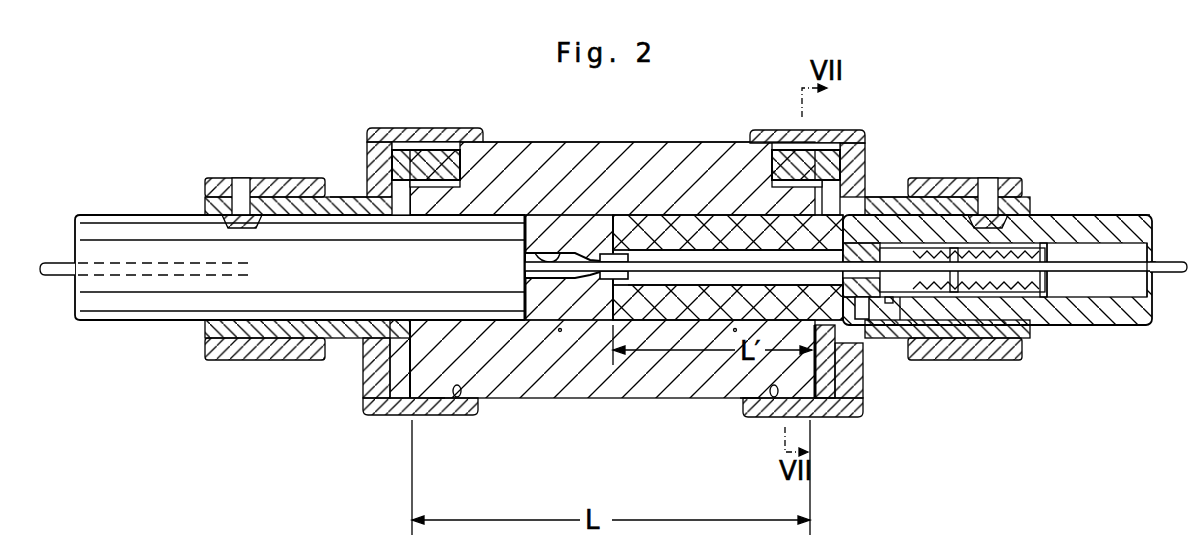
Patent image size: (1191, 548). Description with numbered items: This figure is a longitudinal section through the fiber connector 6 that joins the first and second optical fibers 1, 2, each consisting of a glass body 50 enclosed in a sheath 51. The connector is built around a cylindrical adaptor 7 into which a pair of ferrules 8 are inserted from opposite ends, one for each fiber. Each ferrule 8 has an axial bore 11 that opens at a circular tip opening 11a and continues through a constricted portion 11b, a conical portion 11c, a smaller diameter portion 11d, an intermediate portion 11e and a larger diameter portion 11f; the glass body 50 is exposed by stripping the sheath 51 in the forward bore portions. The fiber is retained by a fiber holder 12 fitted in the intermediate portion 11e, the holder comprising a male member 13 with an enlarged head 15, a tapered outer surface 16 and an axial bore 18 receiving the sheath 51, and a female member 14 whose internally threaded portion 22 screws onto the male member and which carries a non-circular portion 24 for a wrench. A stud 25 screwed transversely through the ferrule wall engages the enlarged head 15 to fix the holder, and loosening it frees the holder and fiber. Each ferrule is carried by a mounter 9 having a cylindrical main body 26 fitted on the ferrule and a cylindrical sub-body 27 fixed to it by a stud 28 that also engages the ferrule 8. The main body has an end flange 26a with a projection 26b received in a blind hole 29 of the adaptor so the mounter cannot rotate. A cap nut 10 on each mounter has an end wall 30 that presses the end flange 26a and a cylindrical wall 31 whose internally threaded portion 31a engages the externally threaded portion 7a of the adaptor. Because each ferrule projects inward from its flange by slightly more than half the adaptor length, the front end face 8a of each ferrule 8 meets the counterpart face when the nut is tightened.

The first optical fiber 1 is at (1100, 250).
The second optical fiber 2 is at (53, 280).
The fiber connector 6 is at (652, 98).
The cylindrical adaptor 7 is at (616, 398).
The externally threaded portion 7a is at (435, 417).
The ferrule 8 is at (325, 303).
The front end face 8a is at (597, 250).
The mounter 9 is at (341, 190).
The cap nut 10 is at (410, 128).
The axial bore 11 is at (548, 240).
The circular tip opening 11a is at (630, 300).
The constricted portion 11b is at (650, 250).
The conical portion 11c is at (690, 262).
The smaller diameter portion 11d is at (728, 262).
The intermediate portion 11e is at (905, 297).
The larger diameter portion 11f is at (1130, 300).
The fiber holder 12 is at (1000, 297).
The male member 13 is at (870, 320).
The female member 14 is at (1038, 258).
The enlarged head 15 is at (848, 398).
The tapered outer surface 16 is at (1040, 297).
The axial bore 18 is at (958, 297).
The internally threaded portion 22 is at (1072, 258).
The non-circular portion 24 is at (955, 297).
The stud 25 is at (888, 302).
The cylindrical main body 26 is at (288, 203).
The end flange 26a is at (828, 417).
The projection 26b is at (462, 170).
The cylindrical sub-body 27 is at (262, 180).
The stud 28 is at (208, 182).
The blind hole 29 is at (432, 165).
The end wall 30 is at (370, 142).
The cylindrical wall 31 is at (372, 410).
The internally threaded portion 31a is at (457, 398).
The glass body 50 is at (560, 332).
The sheath 51 is at (52, 257).